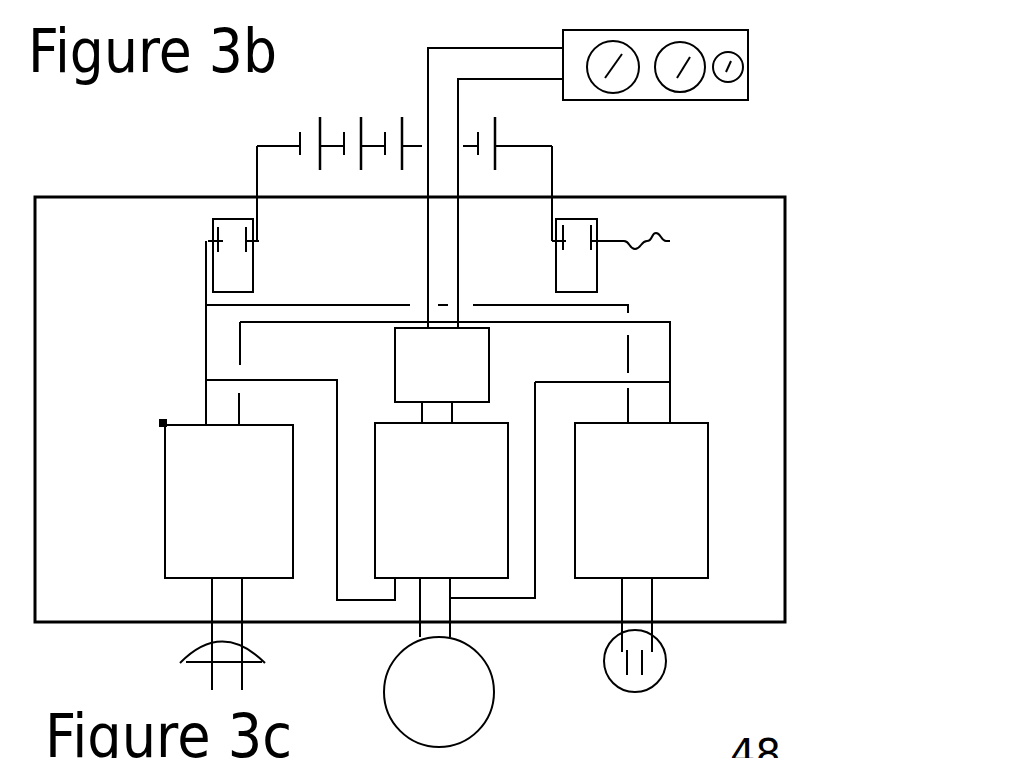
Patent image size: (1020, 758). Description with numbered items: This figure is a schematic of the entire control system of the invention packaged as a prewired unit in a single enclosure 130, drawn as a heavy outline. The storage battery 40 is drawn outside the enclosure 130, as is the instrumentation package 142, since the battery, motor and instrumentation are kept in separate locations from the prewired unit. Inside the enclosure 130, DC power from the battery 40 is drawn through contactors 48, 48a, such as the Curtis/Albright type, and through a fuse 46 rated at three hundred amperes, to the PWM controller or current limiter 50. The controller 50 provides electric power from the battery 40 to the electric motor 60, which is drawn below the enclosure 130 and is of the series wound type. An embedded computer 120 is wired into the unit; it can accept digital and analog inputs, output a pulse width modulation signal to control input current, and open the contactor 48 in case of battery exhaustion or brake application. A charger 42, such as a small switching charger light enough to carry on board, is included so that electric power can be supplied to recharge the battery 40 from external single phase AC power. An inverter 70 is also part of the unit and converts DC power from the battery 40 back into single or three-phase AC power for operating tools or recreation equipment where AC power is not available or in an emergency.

The housing 130 is at (135, 352).
The storage battery 40 is at (315, 127).
The instrumentation package 142 is at (748, 37).
The contactor 48a is at (230, 220).
The contactor 48 is at (575, 219).
The fuse 46 is at (655, 227).
The embedded computer 120 is at (485, 381).
The charger 42 is at (265, 512).
The PWM controller or current limiter 50 is at (465, 508).
The inverter 70 is at (672, 508).
The electric motor 60 is at (462, 718).